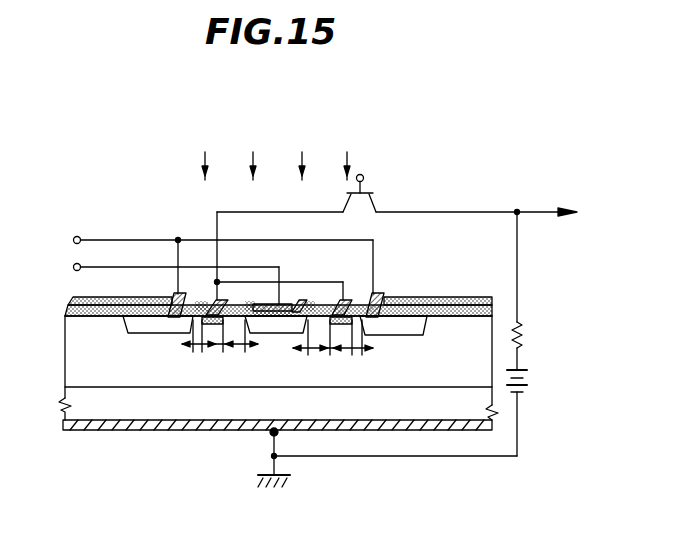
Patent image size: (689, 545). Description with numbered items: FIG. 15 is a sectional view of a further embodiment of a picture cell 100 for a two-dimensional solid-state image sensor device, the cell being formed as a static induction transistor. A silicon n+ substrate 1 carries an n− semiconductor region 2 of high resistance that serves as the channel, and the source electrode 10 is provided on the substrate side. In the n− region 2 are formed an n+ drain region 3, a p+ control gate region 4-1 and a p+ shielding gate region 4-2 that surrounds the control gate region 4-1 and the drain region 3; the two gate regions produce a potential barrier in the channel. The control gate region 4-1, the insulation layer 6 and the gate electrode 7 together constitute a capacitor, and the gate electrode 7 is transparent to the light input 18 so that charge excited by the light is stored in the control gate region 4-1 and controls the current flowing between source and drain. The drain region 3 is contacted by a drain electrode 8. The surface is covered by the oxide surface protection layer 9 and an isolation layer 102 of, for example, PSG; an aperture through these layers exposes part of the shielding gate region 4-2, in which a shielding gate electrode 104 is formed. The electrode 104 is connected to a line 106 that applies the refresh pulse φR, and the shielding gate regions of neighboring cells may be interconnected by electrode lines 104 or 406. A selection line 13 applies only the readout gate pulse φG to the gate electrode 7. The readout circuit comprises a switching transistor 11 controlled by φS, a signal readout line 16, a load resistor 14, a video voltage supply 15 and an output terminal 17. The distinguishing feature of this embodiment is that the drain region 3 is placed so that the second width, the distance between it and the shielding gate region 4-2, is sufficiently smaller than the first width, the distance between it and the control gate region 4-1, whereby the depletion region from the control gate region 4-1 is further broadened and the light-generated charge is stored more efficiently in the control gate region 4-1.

The silicon n+ substrate 1 is at (65, 398).
The n− semiconductor region 2 is at (72, 344).
The n+ drain region 3 is at (205, 323).
The control gate region 4-1 is at (278, 333).
The shielding gate region 4-2 is at (130, 333).
The insulation layer 6 is at (307, 305).
The gate electrode 7 is at (270, 303).
The drain electrode 8 is at (213, 298).
The surface protection layer 9 is at (67, 310).
The source electrode 10 is at (75, 430).
The switching transistor 11 is at (379, 183).
The selection line 13 is at (97, 267).
The load resistor 14 is at (542, 291).
The video voltage supply 15 is at (423, 413).
The signal readout line 16 is at (288, 212).
The output terminal 17 is at (491, 215).
The light input 18 is at (276, 149).
The picture cell 100 is at (202, 436).
The isolation layer 102 is at (107, 297).
The shielding gate electrode 104 is at (175, 293).
The line 106 is at (107, 240).
The electrode line 406 is at (207, 245).